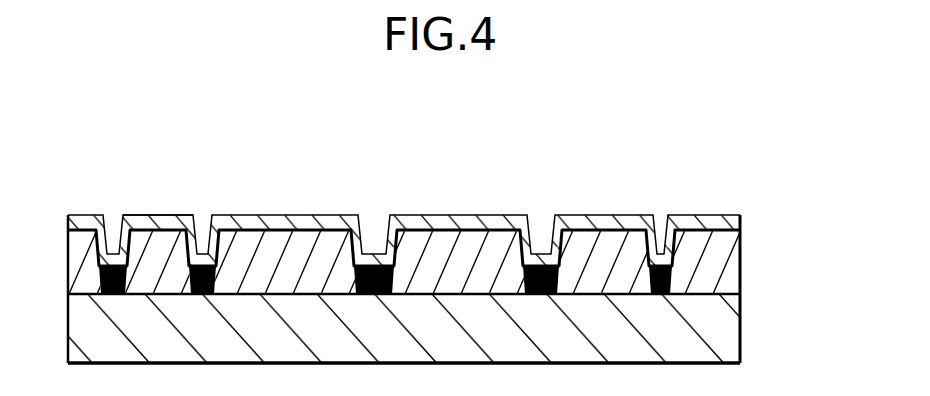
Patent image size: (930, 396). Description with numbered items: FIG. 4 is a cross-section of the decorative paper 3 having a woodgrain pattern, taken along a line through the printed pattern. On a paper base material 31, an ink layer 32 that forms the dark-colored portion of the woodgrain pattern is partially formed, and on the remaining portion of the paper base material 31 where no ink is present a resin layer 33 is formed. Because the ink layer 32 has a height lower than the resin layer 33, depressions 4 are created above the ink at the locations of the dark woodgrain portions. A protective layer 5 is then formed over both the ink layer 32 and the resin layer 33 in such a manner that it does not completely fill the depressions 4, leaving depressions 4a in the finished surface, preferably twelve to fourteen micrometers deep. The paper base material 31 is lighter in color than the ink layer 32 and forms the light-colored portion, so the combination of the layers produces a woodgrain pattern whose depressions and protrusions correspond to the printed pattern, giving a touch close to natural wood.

The decorative paper 3 is at (472, 272).
The paper base material 31 is at (722, 323).
The ink layer 32 is at (447, 224).
The resin layer 33 is at (718, 248).
The depressions 4 is at (385, 220).
The depressions 4a is at (543, 234).
The protective layer 5 is at (162, 222).